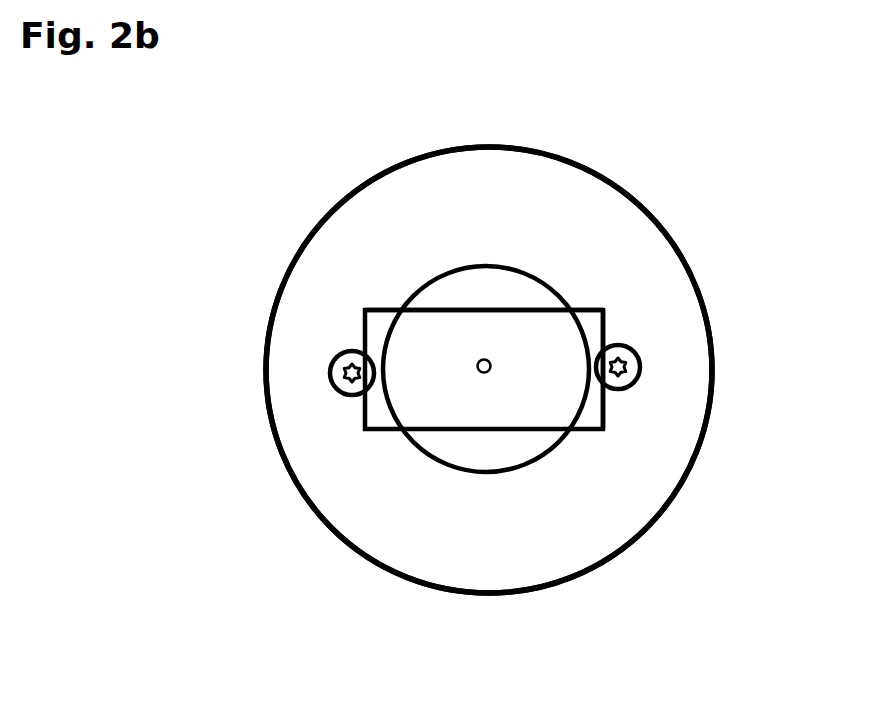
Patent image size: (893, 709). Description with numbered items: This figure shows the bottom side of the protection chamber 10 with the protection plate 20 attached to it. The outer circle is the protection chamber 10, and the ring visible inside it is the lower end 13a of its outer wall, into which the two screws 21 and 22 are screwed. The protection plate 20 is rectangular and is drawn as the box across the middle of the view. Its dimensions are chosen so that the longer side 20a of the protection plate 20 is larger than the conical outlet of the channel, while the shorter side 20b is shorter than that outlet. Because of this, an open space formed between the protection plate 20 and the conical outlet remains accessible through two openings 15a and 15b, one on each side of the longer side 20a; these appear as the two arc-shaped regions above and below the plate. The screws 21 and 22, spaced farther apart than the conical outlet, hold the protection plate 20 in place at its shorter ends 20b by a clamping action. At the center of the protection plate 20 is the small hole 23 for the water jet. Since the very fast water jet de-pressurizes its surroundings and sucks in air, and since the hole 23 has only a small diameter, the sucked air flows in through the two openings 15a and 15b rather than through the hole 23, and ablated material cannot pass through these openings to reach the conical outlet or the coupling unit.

The protection chamber 10 is at (245, 418).
The lower end of the outer wall 13a is at (489, 212).
The opening 15a is at (500, 287).
The opening 15b is at (498, 448).
The protection plate 20 is at (412, 395).
The longer side of the protection plate 20a is at (458, 310).
The shorter side of the protection plate 20b is at (618, 407).
The screw 21 is at (336, 368).
The screw 22 is at (633, 367).
The hole of the protection plate 23 is at (485, 376).